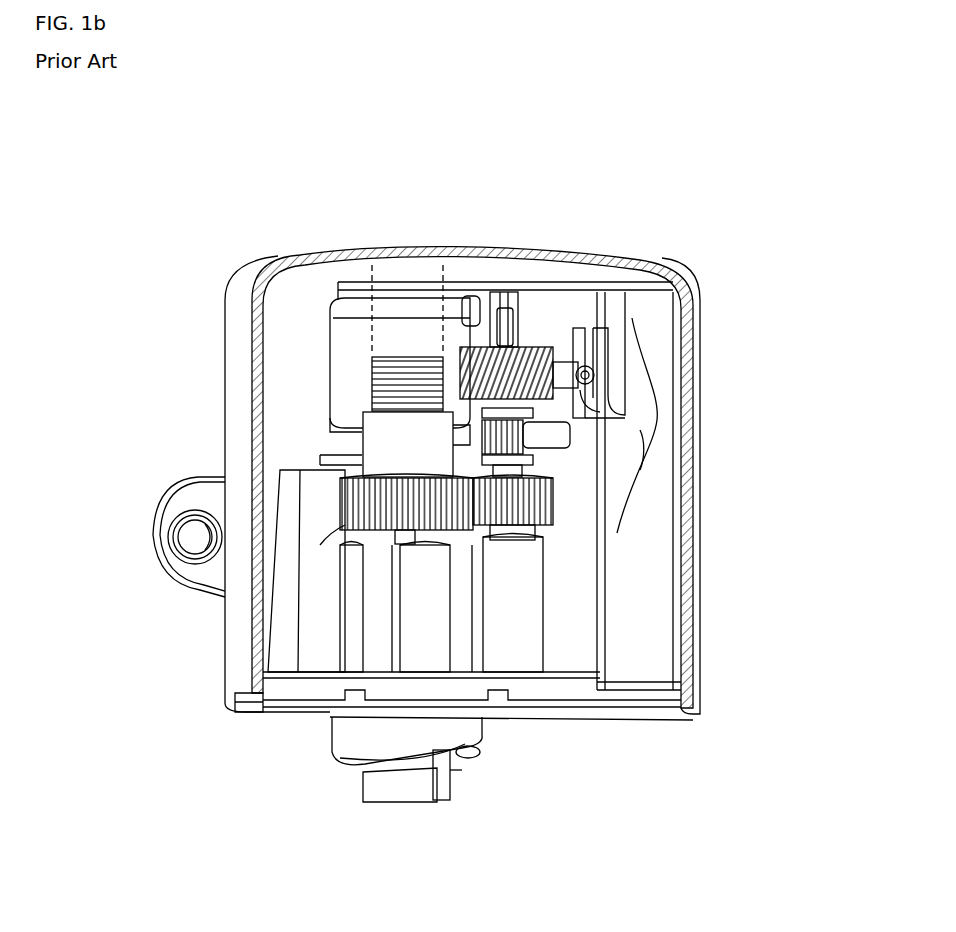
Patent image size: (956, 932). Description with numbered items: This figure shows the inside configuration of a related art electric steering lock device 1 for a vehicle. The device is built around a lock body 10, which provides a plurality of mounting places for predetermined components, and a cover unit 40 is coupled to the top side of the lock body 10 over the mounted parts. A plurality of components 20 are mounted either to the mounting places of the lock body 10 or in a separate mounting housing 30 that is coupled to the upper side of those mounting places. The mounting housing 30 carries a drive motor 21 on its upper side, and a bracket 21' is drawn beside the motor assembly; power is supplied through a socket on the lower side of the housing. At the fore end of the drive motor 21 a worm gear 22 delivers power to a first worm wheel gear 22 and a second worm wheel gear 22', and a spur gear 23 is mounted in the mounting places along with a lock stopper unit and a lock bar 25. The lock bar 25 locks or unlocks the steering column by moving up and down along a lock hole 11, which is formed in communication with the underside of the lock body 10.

The electric steering lock device 1 is at (371, 226).
The lock body 10 is at (536, 718).
The lock hole 11 is at (474, 790).
The components 20 is at (657, 420).
The drive motor 21 is at (400, 313).
The motor bracket 21' is at (617, 289).
The first worm wheel gear 22 is at (527, 310).
The second worm wheel gear 22' is at (564, 637).
The spur gear 23 is at (335, 535).
The lock bar 25 is at (402, 792).
The mounting housing 30 is at (630, 578).
The cover unit 40 is at (655, 262).